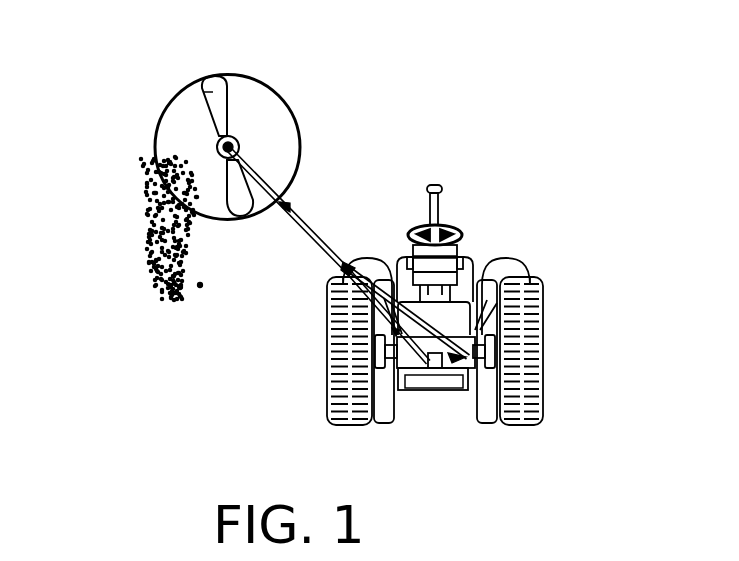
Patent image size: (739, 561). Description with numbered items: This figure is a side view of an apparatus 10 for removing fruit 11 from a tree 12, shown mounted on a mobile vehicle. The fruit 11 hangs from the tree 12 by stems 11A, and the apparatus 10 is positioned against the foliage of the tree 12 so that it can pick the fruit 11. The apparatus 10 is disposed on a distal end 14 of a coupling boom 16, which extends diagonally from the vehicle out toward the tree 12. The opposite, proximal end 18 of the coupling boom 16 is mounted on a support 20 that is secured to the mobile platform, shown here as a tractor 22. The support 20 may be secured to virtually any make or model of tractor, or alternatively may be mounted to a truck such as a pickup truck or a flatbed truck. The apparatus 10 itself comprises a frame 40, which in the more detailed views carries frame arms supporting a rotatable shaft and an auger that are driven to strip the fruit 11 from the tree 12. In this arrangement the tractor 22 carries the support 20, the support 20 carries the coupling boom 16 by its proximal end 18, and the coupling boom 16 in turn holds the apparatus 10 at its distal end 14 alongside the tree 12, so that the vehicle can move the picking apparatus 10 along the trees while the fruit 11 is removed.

The apparatus 10 is at (318, 62).
The fruit 11 is at (200, 285).
The stems 11A is at (180, 287).
The tree 12 is at (147, 243).
The distal end 14 is at (240, 150).
The coupling boom 16 is at (313, 236).
The proximal end 18 is at (432, 388).
The support 20 is at (458, 392).
The tractor 22 is at (503, 272).
The frame 40 is at (228, 147).